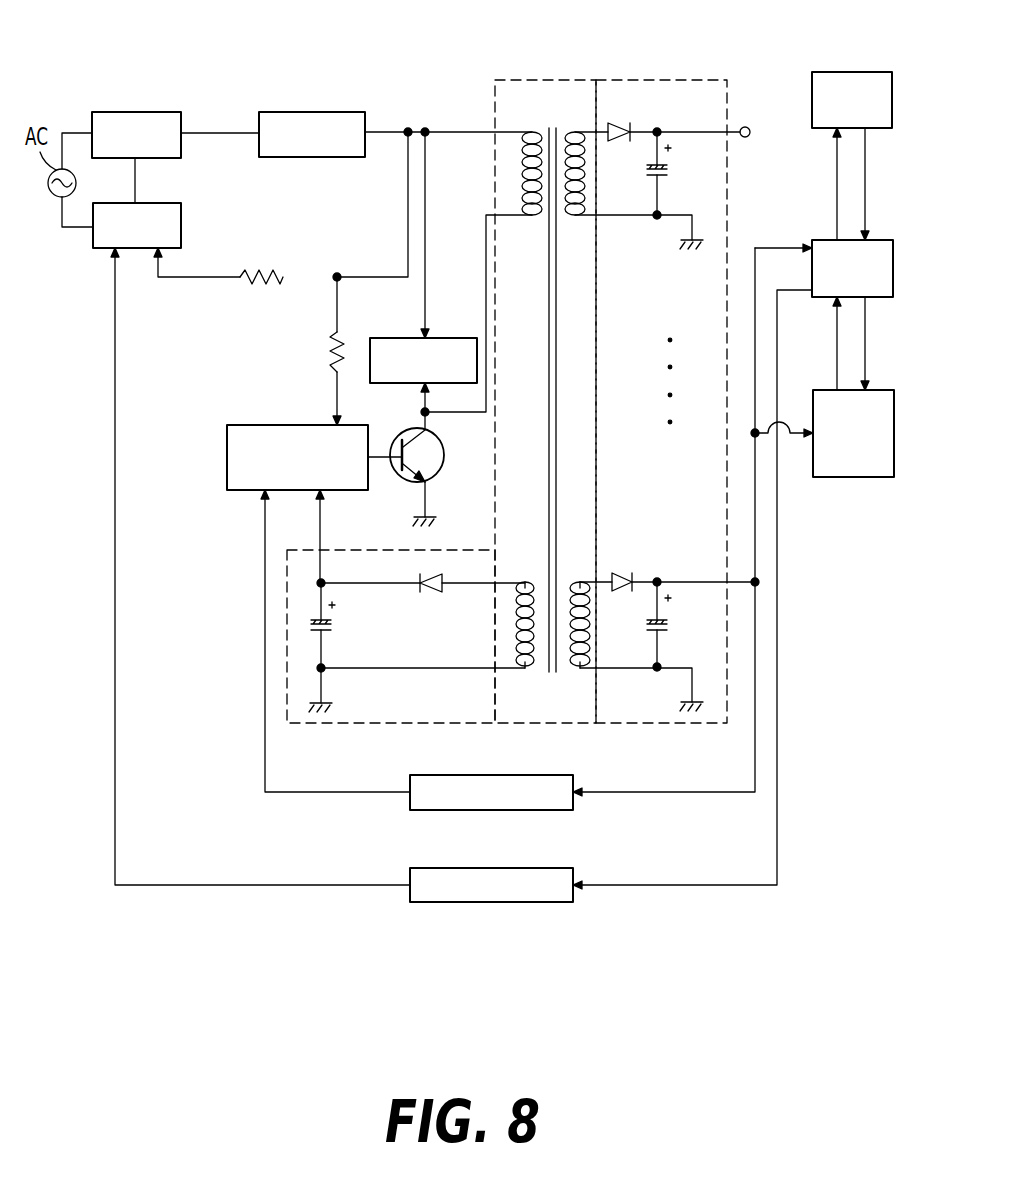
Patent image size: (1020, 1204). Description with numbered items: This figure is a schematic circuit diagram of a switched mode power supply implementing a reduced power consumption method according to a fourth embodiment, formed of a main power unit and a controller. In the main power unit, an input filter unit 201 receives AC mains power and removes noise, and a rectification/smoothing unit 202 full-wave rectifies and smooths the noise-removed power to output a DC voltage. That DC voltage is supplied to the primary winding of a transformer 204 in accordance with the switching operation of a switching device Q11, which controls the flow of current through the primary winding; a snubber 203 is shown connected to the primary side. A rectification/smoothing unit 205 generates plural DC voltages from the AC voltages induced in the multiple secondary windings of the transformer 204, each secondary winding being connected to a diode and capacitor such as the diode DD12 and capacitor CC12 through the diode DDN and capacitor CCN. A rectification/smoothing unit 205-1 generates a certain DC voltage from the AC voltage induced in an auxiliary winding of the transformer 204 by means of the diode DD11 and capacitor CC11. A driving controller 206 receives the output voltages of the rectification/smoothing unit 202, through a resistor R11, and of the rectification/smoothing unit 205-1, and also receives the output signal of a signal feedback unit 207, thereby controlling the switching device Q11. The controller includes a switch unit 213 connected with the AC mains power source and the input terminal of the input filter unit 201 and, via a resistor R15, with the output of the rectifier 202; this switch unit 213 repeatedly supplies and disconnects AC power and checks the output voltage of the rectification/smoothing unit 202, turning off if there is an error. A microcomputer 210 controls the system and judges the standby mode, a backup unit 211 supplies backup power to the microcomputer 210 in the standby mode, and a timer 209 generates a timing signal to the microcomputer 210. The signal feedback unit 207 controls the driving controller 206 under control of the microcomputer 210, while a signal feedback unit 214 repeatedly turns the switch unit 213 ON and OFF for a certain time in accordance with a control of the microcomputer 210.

The input filter unit 201 is at (120, 112).
The rectification/smoothing unit 202 is at (308, 112).
The snubber 203 is at (395, 338).
The transformer 204 is at (537, 80).
The rectification/smoothing unit 205 is at (661, 370).
The rectification/smoothing unit 205-1 is at (391, 662).
The driving controller 206 is at (270, 425).
The signal feedback unit 207 is at (470, 775).
The timer 209 is at (845, 72).
The microcomputer 210 is at (825, 240).
The backup unit 211 is at (848, 477).
The switch unit 213 is at (100, 250).
The signal feedback unit 214 is at (515, 902).
The resistor R15 is at (261, 298).
The resistor R11 is at (318, 352).
The switching device Q11 is at (444, 462).
The diode DD12 is at (627, 114).
The capacitor CC12 is at (677, 173).
The diode DDN is at (625, 562).
The capacitor CCN is at (675, 624).
The diode DD11 is at (387, 603).
The capacitor CC11 is at (347, 645).